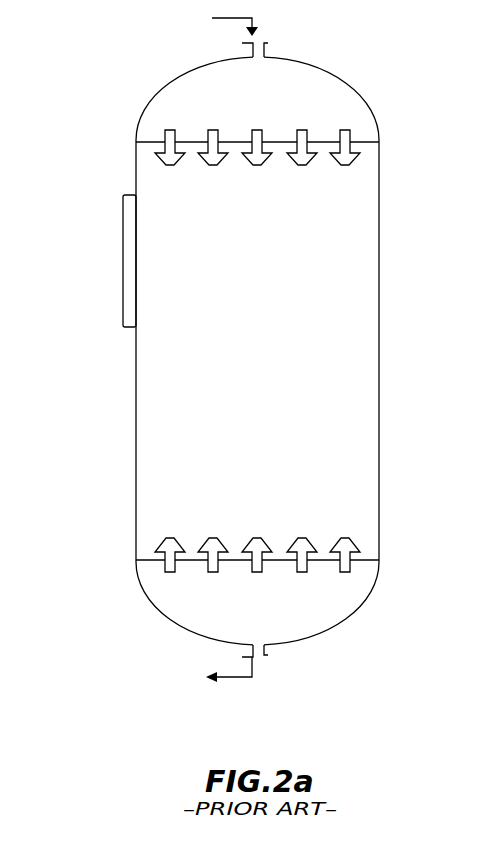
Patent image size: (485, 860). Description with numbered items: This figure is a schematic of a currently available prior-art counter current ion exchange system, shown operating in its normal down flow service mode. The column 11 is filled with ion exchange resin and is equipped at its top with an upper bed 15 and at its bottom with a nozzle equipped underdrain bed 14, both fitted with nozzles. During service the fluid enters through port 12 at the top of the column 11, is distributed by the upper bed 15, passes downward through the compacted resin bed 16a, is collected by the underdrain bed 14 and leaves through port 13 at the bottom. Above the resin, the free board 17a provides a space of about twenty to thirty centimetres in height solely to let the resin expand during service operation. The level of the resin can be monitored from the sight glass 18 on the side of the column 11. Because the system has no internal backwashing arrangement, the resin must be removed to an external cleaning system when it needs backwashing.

The column 11 is at (379, 300).
The port 12 is at (267, 43).
The port 13 is at (268, 653).
The nozzle equipped underdrain bed 14 is at (352, 536).
The upper bed 15 is at (352, 161).
The compacted resin bed 16a is at (278, 452).
The free board 17a is at (278, 233).
The sight glass 18 is at (123, 265).